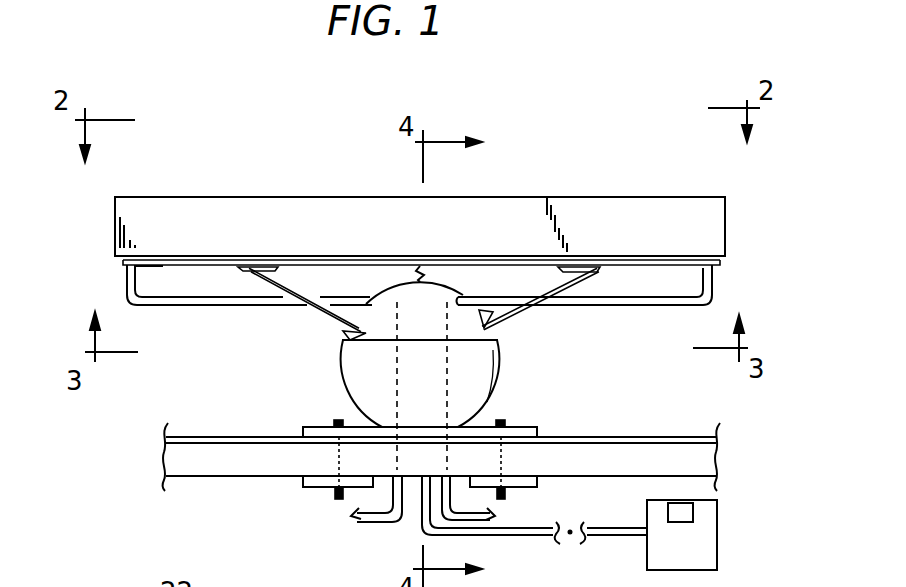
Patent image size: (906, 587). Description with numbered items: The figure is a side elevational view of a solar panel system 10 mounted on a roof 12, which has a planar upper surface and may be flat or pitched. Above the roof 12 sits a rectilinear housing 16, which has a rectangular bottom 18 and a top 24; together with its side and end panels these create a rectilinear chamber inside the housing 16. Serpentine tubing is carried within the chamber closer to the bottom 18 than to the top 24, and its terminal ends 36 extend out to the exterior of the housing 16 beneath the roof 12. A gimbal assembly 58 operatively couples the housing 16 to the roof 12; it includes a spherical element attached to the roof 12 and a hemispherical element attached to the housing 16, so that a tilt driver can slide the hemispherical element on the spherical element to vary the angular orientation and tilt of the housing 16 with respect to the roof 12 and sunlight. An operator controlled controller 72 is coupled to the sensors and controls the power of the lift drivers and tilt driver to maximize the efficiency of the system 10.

The solar panel system 10 is at (565, 136).
The roof 12 is at (720, 457).
The rectilinear housing 16 is at (114, 222).
The rectangular bottom 18 is at (162, 268).
The top 24 is at (300, 197).
The terminal ends 36 is at (357, 520).
The gimbal assembly 58 is at (352, 355).
The operator controlled controller 72 is at (703, 528).